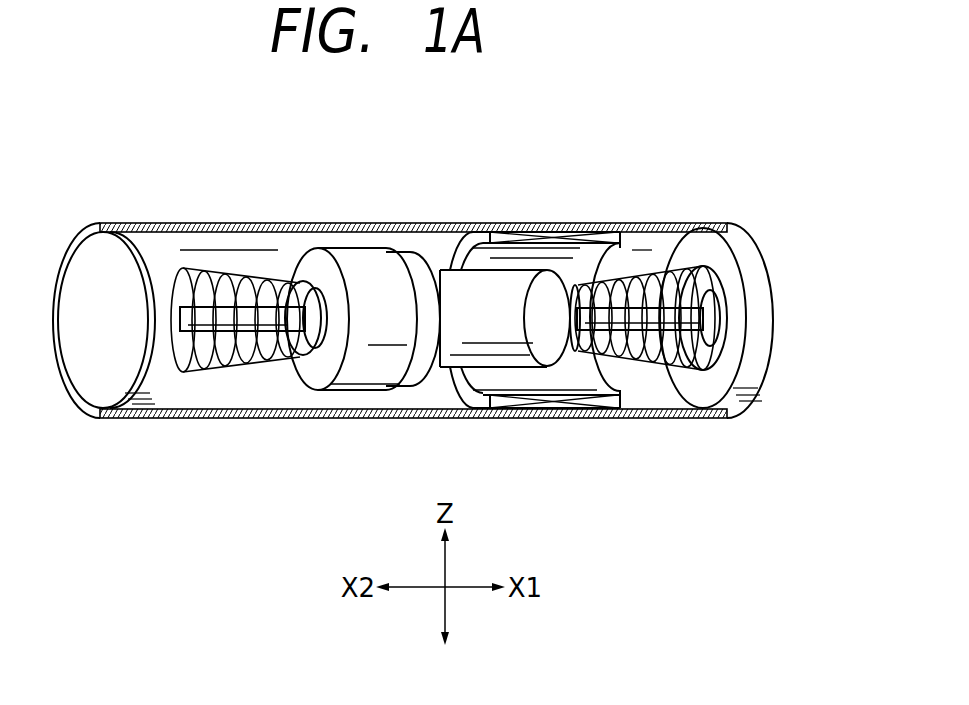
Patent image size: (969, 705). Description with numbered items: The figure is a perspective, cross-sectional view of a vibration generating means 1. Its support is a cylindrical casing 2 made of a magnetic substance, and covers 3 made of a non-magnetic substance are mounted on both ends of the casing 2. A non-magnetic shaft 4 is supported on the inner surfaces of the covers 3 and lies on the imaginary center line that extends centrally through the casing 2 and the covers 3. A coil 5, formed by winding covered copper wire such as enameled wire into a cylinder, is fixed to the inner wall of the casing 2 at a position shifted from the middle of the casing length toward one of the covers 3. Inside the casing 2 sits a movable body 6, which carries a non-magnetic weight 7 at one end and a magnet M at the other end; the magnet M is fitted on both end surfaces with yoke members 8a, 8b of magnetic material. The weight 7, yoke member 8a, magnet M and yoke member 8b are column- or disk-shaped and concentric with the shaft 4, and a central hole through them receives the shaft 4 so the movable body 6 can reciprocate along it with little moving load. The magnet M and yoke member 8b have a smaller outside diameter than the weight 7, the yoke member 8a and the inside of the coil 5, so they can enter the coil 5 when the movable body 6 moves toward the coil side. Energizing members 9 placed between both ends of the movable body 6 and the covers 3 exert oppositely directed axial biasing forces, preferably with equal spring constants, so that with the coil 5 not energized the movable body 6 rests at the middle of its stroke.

The vibration generating means 1 is at (224, 195).
The casing 2 is at (655, 223).
The cover 3 is at (85, 388).
The shaft 4 is at (253, 367).
The coil 5 is at (568, 228).
The movable body 6 is at (600, 133).
The weight 7 is at (360, 262).
The yoke member 8a is at (415, 260).
The yoke member 8b is at (540, 278).
The magnet M is at (468, 287).
The energizing member 9 is at (207, 367).